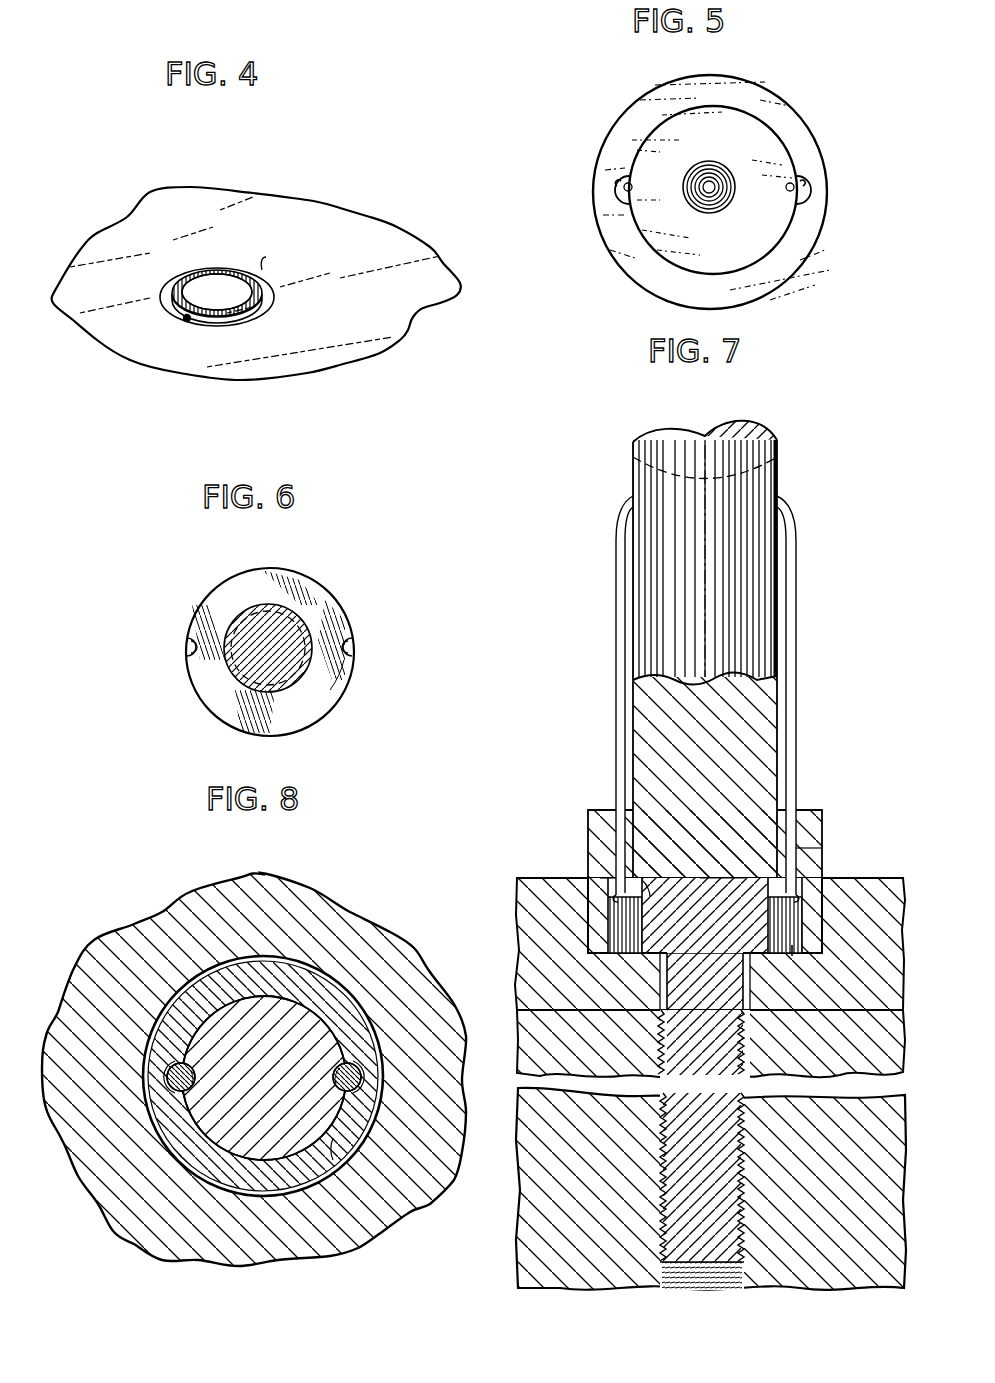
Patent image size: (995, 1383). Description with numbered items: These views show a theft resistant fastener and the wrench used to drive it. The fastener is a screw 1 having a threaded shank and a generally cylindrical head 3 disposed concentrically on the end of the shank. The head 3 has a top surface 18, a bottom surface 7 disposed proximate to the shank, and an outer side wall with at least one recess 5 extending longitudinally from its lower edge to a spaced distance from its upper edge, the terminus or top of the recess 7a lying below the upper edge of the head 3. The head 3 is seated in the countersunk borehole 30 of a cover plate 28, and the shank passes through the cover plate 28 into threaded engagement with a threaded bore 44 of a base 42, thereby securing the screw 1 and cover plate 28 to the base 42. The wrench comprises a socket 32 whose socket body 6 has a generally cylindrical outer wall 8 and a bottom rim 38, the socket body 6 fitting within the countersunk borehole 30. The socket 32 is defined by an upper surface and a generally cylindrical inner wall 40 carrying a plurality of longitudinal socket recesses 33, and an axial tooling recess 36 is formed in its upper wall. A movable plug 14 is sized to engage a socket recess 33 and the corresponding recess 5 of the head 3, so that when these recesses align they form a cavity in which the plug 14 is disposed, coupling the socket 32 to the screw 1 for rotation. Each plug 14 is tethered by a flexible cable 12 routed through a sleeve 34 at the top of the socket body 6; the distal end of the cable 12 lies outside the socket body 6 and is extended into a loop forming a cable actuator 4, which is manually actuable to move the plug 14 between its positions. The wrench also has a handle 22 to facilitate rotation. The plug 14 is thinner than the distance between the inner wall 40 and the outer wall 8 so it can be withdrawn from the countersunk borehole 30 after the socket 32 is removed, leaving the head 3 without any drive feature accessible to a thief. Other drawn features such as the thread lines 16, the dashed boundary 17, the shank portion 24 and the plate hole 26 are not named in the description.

In FIG. 7, the screw 1 is at (685, 841).
In FIG. 4, the generally cylindrical head 3 is at (181, 273).
In FIG. 6, the generally cylindrical head 3 is at (247, 660).
In FIG. 8, the generally cylindrical head 3 is at (263, 1163).
In FIG. 7, the cable actuator 4 is at (633, 457).
In FIG. 4, the recess 5 is at (183, 324).
In FIG. 6, the recess 5 is at (182, 648).
In FIG. 8, the recess 5 is at (322, 1068).
In FIG. 5, the socket body 6 is at (603, 250).
In FIG. 7, the socket body 6 is at (710, 867).
In FIG. 6, the bottom surface 7 is at (246, 602).
In FIG. 6, the top of the recess 7a is at (351, 657).
In FIG. 7, the top of the recess 7a is at (645, 892).
In FIG. 5, the outer wall 8 is at (689, 155).
In FIG. 8, the outer wall 8 is at (333, 1142).
In FIG. 7, the outer wall 8 is at (590, 810).
In FIG. 5, the flexible cable 12 is at (618, 186).
In FIG. 8, the flexible cable 12 is at (170, 1066).
In FIG. 7, the flexible cable 12 is at (616, 688).
In FIG. 7, the movable plug 14 is at (790, 960).
In FIG. 6, the lower plate 16 is at (288, 612).
In FIG. 7, the lower plate 16 is at (745, 1033).
In FIG. 6, the dashed inner line 17 is at (328, 612).
In FIG. 4, the top surface 18 is at (215, 288).
In FIG. 7, the handle 22 is at (777, 458).
In FIG. 7, the shank 24 is at (664, 1002).
In FIG. 4, the hole in plate 26 is at (271, 300).
In FIG. 8, the hole in plate 26 is at (283, 1076).
In FIG. 4, the cover plate 28 is at (309, 245).
In FIG. 8, the cover plate 28 is at (398, 1228).
In FIG. 7, the cover plate 28 is at (522, 879).
In FIG. 4, the countersunk borehole 30 is at (273, 268).
In FIG. 7, the countersunk borehole 30 is at (830, 877).
In FIG. 5, the socket 32 is at (760, 158).
In FIG. 7, the socket 32 is at (745, 880).
In FIG. 5, the socket recess 33 is at (814, 178).
In FIG. 8, the socket recess 33 is at (165, 1082).
In FIG. 7, the socket recess 33 is at (600, 882).
In FIG. 5, the sleeve 34 is at (641, 184).
In FIG. 7, the sleeve 34 is at (802, 849).
In FIG. 5, the axial tooling recess 36 is at (736, 206).
In FIG. 7, the axial tooling recess 36 is at (720, 866).
In FIG. 5, the bottom rim 38 is at (620, 134).
In FIG. 7, the bottom rim 38 is at (625, 956).
In FIG. 5, the inner wall 40 is at (757, 124).
In FIG. 8, the inner wall 40 is at (192, 1132).
In FIG. 7, the inner wall 40 is at (606, 920).
In FIG. 7, the base 42 is at (832, 1255).
In FIG. 7, the threaded bore 44 is at (668, 1268).